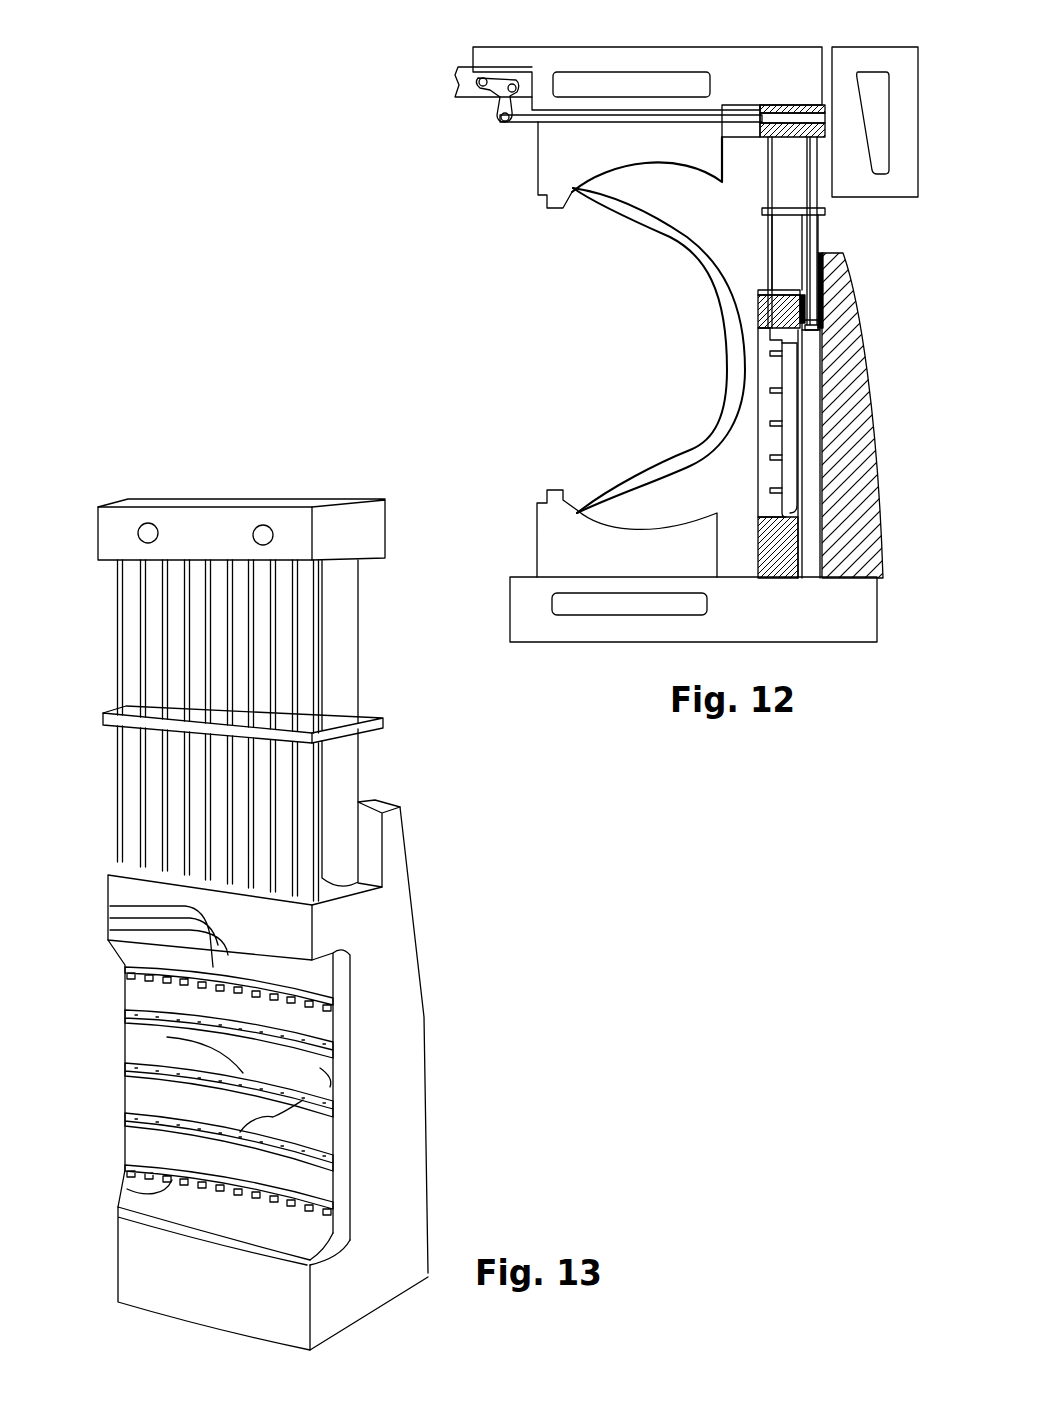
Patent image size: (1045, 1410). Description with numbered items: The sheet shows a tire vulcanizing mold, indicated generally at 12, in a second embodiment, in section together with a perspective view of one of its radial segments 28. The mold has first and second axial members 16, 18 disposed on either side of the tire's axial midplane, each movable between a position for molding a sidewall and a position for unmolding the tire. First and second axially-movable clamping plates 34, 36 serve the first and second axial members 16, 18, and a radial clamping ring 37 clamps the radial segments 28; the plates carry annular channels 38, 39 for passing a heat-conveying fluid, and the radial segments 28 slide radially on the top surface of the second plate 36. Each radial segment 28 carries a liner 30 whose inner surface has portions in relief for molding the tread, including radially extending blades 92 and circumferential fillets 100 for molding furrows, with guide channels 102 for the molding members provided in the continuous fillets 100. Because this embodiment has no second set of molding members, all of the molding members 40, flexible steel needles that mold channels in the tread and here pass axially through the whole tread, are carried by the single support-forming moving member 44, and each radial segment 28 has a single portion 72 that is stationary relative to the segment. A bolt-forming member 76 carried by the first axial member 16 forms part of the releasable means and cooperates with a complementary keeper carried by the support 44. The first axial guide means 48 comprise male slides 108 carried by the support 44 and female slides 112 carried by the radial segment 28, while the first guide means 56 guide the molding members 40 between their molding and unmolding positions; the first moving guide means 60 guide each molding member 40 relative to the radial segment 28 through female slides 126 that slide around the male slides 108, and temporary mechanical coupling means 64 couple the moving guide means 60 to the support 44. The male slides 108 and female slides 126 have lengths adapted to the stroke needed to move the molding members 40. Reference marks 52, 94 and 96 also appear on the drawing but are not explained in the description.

In FIG. 12, the cutting apparatus 12 is at (667, 380).
In FIG. 12, the first axial member 16 is at (563, 157).
In FIG. 12, the second axial member 18 is at (562, 548).
In FIG. 12, the radial segment 28 is at (893, 467).
In FIG. 13, the radial segment 28 is at (88, 1066).
In FIG. 13, the molding liner 30 is at (320, 1068).
In FIG. 12, the first clamping plate 34 is at (735, 63).
In FIG. 12, the second clamping plate 36 is at (813, 618).
In FIG. 12, the radial clamping ring 37 is at (880, 60).
In FIG. 12, the annular channel 38 is at (583, 82).
In FIG. 12, the annular channel 39 is at (592, 605).
In FIG. 12, the first molding members 40 is at (768, 192).
In FIG. 13, the first molding members 40 is at (118, 647).
In FIG. 12, the first moving member 44 is at (745, 137).
In FIG. 13, the first moving member 44 is at (402, 525).
In FIG. 12, the first axial guide means 48 is at (842, 321).
In FIG. 12, the latch 52 is at (770, 84).
In FIG. 12, the first guide means 56 is at (760, 318).
In FIG. 12, the first moving guide means 60 is at (838, 243).
In FIG. 12, the first temporary mechanical coupling means 64 is at (818, 348).
In FIG. 12, the stationary portion 72 is at (858, 540).
In FIG. 13, the stationary portion 72 is at (393, 975).
In FIG. 13, the bolt-forming member 76 is at (217, 533).
In FIG. 13, the blades 92 is at (365, 1012).
In FIG. 13, the lower comb section 94 is at (372, 1202).
In FIG. 13, the toothed guide 96 is at (118, 925).
In FIG. 13, the circumferential fillets 100 is at (333, 1046).
In FIG. 13, the guide channels 102 is at (167, 1037).
In FIG. 12, the male slides 108 is at (810, 185).
In FIG. 13, the male slides 108 is at (175, 617).
In FIG. 12, the female slides 112 is at (808, 443).
In FIG. 12, the female slides 126 is at (772, 248).
In FIG. 13, the female slides 126 is at (158, 833).